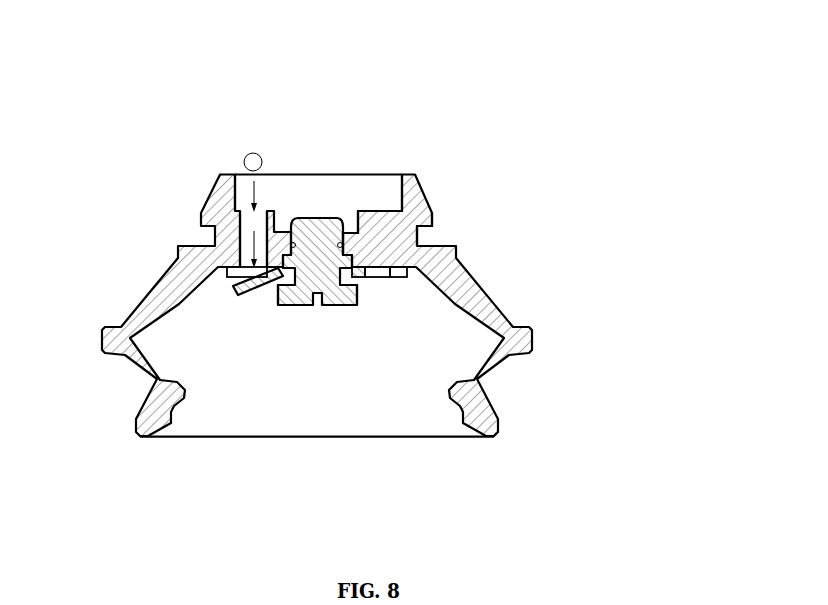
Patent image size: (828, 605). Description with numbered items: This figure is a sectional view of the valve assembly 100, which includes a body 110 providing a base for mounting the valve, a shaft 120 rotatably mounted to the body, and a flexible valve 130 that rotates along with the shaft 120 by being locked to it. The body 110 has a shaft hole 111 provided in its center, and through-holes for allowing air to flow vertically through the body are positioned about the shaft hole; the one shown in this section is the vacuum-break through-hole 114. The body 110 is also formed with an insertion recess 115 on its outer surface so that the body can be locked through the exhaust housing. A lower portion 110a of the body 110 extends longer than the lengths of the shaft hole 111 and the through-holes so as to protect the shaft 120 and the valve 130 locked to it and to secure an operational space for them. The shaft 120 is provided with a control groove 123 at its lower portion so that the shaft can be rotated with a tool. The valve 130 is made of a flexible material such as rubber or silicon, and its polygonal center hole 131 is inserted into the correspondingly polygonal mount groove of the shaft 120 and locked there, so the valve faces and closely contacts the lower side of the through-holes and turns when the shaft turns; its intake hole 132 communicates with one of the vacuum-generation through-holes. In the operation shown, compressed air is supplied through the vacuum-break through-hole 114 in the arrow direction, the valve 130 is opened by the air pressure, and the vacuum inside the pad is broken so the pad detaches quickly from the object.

The valve assembly 100 is at (363, 259).
The body 110 is at (374, 313).
The lower portion of the body 110a is at (446, 440).
The shaft hole 111 is at (345, 236).
The vacuum-break through-hole 114 is at (244, 221).
The insertion recess 115 is at (440, 232).
The shaft 120 is at (310, 366).
The control groove 123 is at (310, 303).
The valve 130 is at (368, 296).
The center hole 131 is at (300, 278).
The intake hole 132 is at (391, 278).